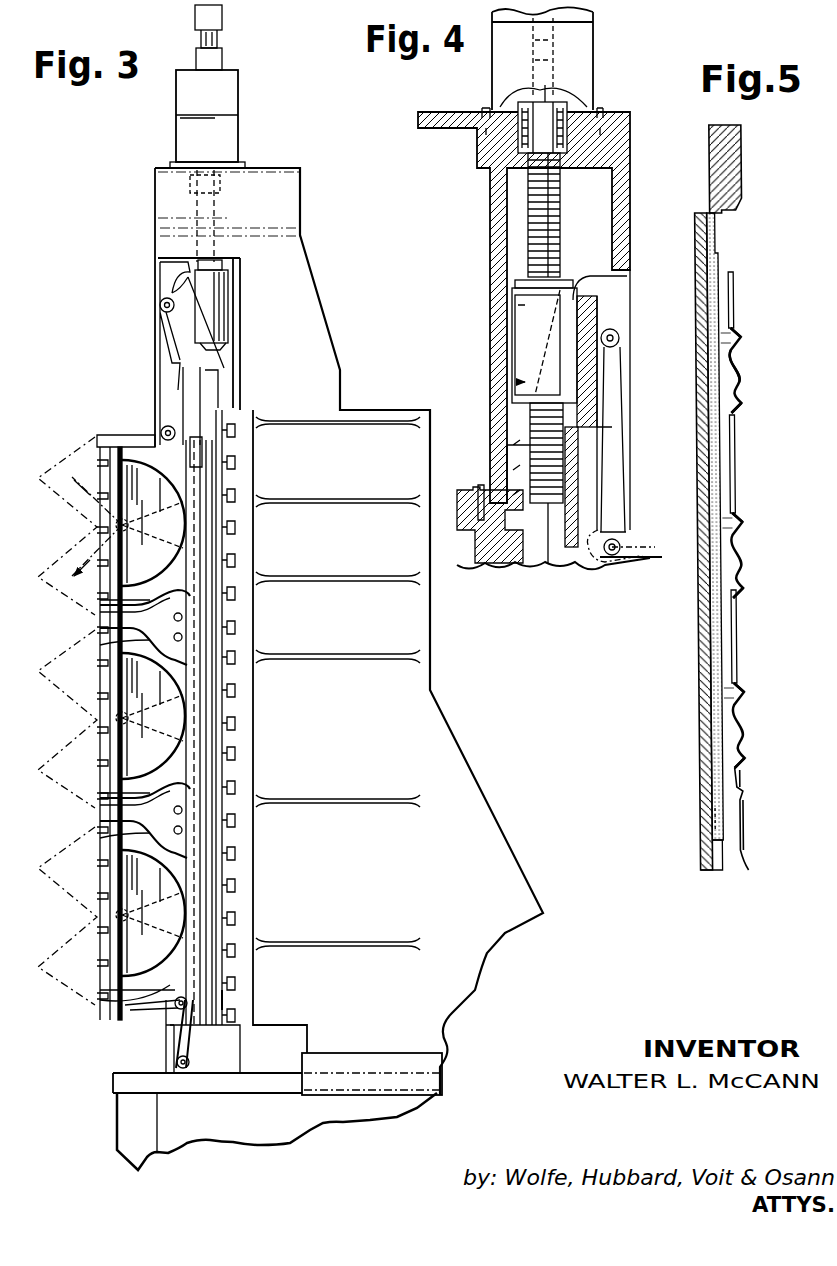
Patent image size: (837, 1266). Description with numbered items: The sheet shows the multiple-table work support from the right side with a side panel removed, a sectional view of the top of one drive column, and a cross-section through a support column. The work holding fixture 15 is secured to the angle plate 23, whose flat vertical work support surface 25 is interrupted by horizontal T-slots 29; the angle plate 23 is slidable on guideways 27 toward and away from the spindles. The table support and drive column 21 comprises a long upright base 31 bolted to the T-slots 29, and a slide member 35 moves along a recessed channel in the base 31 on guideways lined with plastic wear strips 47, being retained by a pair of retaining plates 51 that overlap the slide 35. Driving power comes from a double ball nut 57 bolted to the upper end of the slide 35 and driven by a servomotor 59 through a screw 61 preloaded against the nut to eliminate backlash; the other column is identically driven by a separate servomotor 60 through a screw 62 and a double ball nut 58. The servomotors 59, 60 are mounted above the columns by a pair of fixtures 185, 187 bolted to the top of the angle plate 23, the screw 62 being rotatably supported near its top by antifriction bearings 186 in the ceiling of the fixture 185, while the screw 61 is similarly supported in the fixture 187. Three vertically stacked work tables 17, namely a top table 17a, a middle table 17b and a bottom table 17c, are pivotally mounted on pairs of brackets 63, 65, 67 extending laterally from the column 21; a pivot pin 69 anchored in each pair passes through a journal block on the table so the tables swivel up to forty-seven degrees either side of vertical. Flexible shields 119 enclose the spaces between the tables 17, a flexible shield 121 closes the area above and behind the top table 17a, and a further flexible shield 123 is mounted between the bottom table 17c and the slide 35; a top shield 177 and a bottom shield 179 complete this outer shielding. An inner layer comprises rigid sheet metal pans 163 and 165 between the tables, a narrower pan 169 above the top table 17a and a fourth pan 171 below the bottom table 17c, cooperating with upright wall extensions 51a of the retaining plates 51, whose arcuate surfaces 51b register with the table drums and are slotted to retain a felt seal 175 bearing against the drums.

In FIG. 3, the work holding fixture 15 is at (238, 1052).
In FIG. 3, the work tables 17 is at (62, 650).
In FIG. 3, the top work table 17a is at (162, 580).
In FIG. 3, the middle work table 17b is at (162, 774).
In FIG. 3, the bottom work table 17c is at (162, 974).
In FIG. 3, the table support and drive column 21 is at (330, 297).
In FIG. 3, the angle plate 23 is at (388, 999).
In FIG. 4, the angle plate 23 is at (480, 568).
In FIG. 3, the work support surface 25 is at (223, 998).
In FIG. 3, the guideways 27 is at (372, 1053).
In FIG. 3, the T-slots 29 is at (238, 753).
In FIG. 3, the upright base 31 is at (218, 882).
In FIG. 5, the upright base 31 is at (695, 257).
In FIG. 3, the slide member 35 is at (193, 420).
In FIG. 5, the slide member 35 is at (710, 815).
In FIG. 3, the plastic wear strips 47 is at (116, 462).
In FIG. 5, the slide retaining plates 51 is at (722, 258).
In FIG. 5, the upright wall extensions 51a is at (740, 345).
In FIG. 5, the arcuate surfaces 51b is at (738, 360).
In FIG. 3, the double ball nut 57 is at (228, 305).
In FIG. 4, the double ball nut 58 is at (520, 331).
In FIG. 3, the servomotor 59 is at (220, 40).
In FIG. 4, the servomotor 60 is at (594, 62).
In FIG. 3, the screw 61 is at (222, 212).
In FIG. 4, the screw 62 is at (560, 222).
In FIG. 3, the top pair of brackets 63 is at (150, 512).
In FIG. 3, the middle pair of brackets 65 is at (150, 706).
In FIG. 3, the bottom pair of brackets 67 is at (150, 903).
In FIG. 3, the pivot pin 69 is at (128, 540).
In FIG. 3, the flexible shields 119 is at (135, 640).
In FIG. 3, the flexible shield 121 is at (130, 440).
In FIG. 3, the flexible shield 123 is at (160, 1010).
In FIG. 5, the sheet metal pan 163 is at (735, 463).
In FIG. 5, the sheet metal pan 165 is at (735, 650).
In FIG. 3, the narrower pan 169 is at (207, 415).
In FIG. 5, the narrower pan 169 is at (735, 298).
In FIG. 3, the fourth pan 171 is at (170, 1010).
In FIG. 5, the fourth pan 171 is at (740, 820).
In FIG. 5, the felt seal 175 is at (738, 382).
In FIG. 3, the top shield 177 is at (157, 316).
In FIG. 3, the bottom shield 179 is at (165, 1050).
In FIG. 4, the fixture 185 is at (620, 163).
In FIG. 4, the antifriction bearings 186 is at (518, 140).
In FIG. 3, the fixture 187 is at (312, 262).